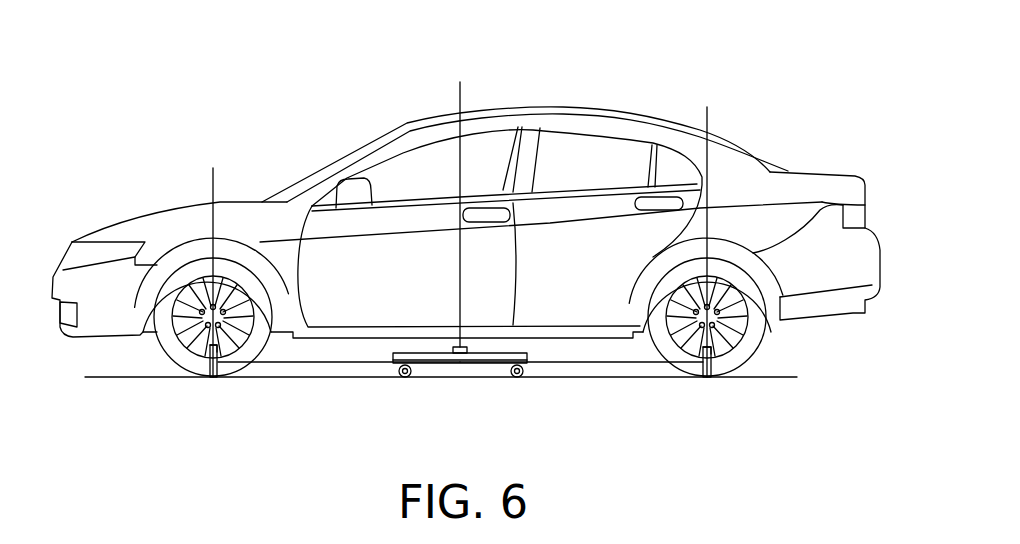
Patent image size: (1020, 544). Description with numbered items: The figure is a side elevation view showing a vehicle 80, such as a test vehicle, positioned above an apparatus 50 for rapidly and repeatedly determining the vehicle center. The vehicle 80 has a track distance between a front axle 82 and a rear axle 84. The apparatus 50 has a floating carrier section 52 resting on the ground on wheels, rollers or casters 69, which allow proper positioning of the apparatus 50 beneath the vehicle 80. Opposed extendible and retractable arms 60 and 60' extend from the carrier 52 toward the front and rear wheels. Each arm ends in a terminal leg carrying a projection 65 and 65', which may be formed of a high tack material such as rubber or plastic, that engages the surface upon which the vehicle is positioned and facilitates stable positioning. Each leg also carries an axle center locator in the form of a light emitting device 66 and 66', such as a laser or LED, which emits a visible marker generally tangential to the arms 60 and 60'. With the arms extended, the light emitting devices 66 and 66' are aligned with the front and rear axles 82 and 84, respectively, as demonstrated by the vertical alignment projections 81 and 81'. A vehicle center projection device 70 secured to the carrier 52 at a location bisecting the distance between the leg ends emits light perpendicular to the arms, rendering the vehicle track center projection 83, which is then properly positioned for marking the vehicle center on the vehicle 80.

The apparatus 50 is at (369, 372).
The floating carrier section 52 is at (481, 361).
The extendible and retractable arm 60 is at (339, 407).
The extendible and retractable arm 60' is at (581, 407).
The projection 65 is at (197, 399).
The projection 65' is at (728, 400).
The light emitting device 66 is at (171, 389).
The light emitting device 66' is at (753, 392).
The rollers or casters 69 is at (397, 368).
The vehicle center projection device 70 is at (460, 401).
The vehicle 80 is at (682, 96).
The alignment projection 81 is at (173, 272).
The alignment projection 81' is at (749, 240).
The front axle 82 is at (210, 320).
The vehicle track center projection 83 is at (460, 112).
The rear axle 84 is at (712, 325).